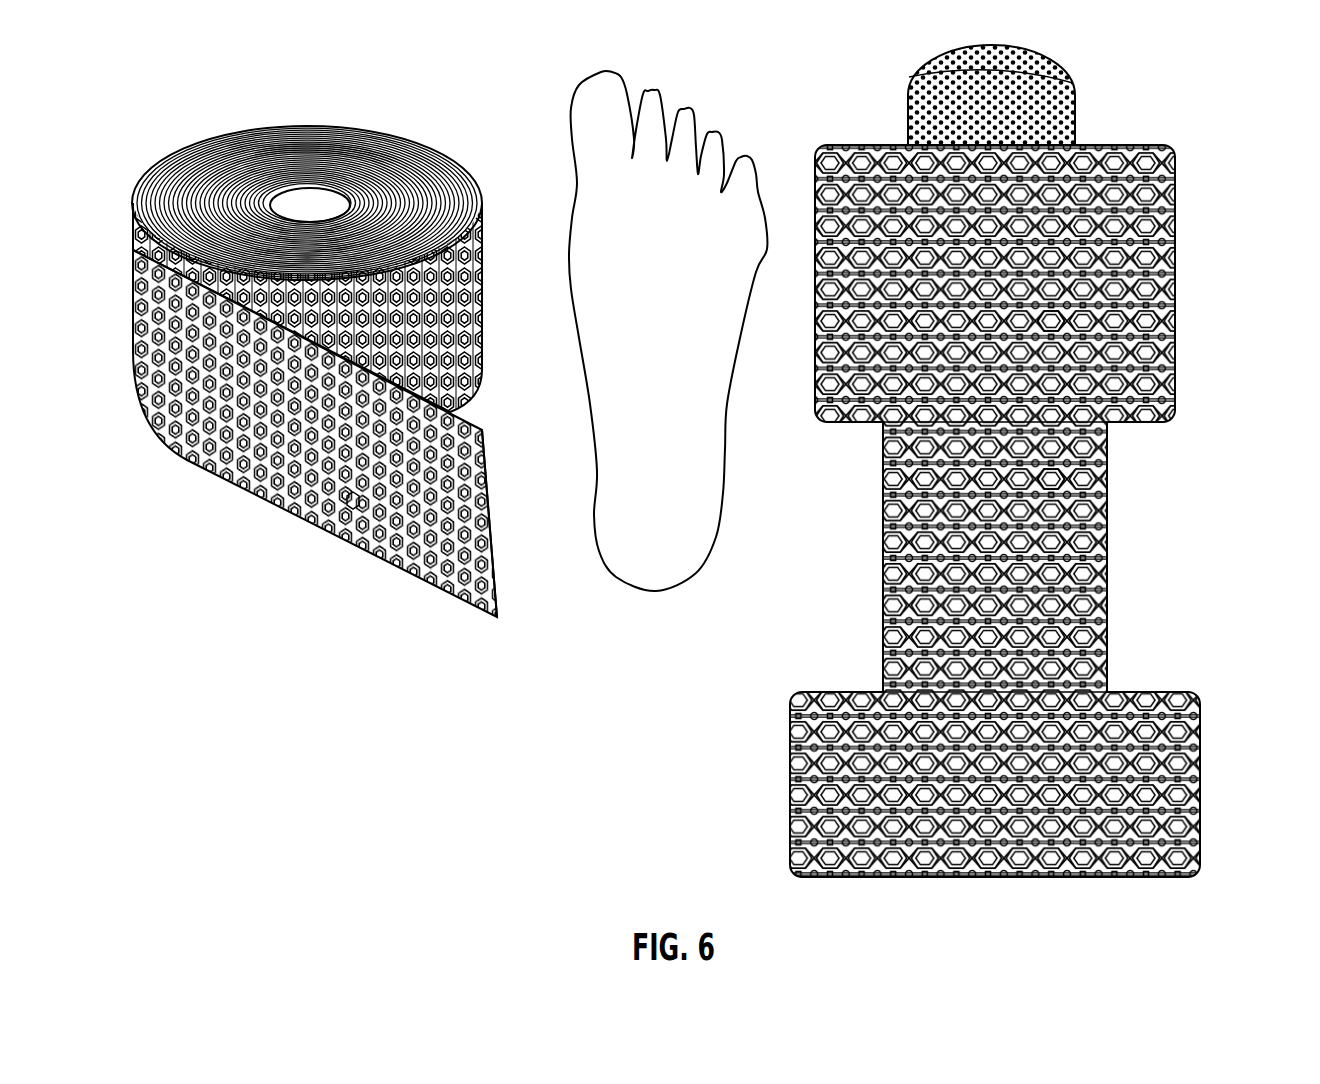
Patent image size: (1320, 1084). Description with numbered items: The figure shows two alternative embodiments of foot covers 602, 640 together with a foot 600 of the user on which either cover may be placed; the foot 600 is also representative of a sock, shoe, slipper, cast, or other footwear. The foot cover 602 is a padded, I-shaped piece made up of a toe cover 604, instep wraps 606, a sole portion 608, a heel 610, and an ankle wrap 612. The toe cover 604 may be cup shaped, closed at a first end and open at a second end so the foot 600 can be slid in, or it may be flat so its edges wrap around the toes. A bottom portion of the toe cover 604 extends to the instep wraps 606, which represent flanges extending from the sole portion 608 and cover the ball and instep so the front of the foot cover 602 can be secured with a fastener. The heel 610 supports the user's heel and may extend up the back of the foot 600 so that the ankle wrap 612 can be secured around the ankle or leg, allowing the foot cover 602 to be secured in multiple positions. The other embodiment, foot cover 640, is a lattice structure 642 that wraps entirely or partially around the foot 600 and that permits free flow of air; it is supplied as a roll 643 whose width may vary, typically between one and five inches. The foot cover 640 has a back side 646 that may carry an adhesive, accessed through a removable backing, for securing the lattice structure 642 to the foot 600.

The foot 600 is at (725, 492).
The foot cover 602 is at (876, 603).
The toe cover 604 is at (1053, 120).
The instep wraps 606 is at (1152, 210).
The sole portion 608 is at (1040, 320).
The heel 610 is at (1047, 477).
The ankle wrap 612 is at (1203, 757).
The foot cover 640 is at (413, 578).
The lattice structure 642 is at (353, 502).
The roll 643 is at (200, 158).
The back side 646 is at (484, 480).